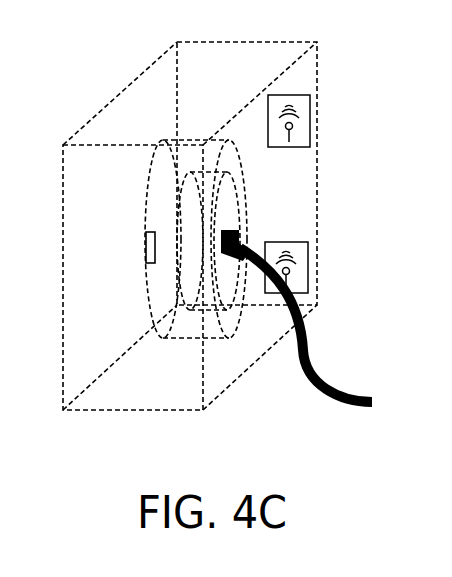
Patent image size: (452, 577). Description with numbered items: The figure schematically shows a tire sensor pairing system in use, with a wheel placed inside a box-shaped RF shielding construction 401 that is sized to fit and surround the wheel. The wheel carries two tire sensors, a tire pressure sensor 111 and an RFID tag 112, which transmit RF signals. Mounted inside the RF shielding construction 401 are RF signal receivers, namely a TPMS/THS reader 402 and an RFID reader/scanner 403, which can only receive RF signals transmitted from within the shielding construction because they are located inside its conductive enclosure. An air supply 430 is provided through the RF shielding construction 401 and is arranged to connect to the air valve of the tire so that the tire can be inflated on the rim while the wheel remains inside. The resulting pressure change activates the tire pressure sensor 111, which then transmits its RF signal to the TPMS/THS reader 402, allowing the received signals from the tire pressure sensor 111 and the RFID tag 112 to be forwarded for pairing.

The RF shielding construction 401 is at (176, 43).
The RFID reader/scanner 403 is at (310, 112).
The TPMS/THS reader 402 is at (308, 265).
The tire pressure sensor 111 is at (228, 230).
The RFID tag 112 is at (146, 257).
The air supply 430 is at (303, 337).